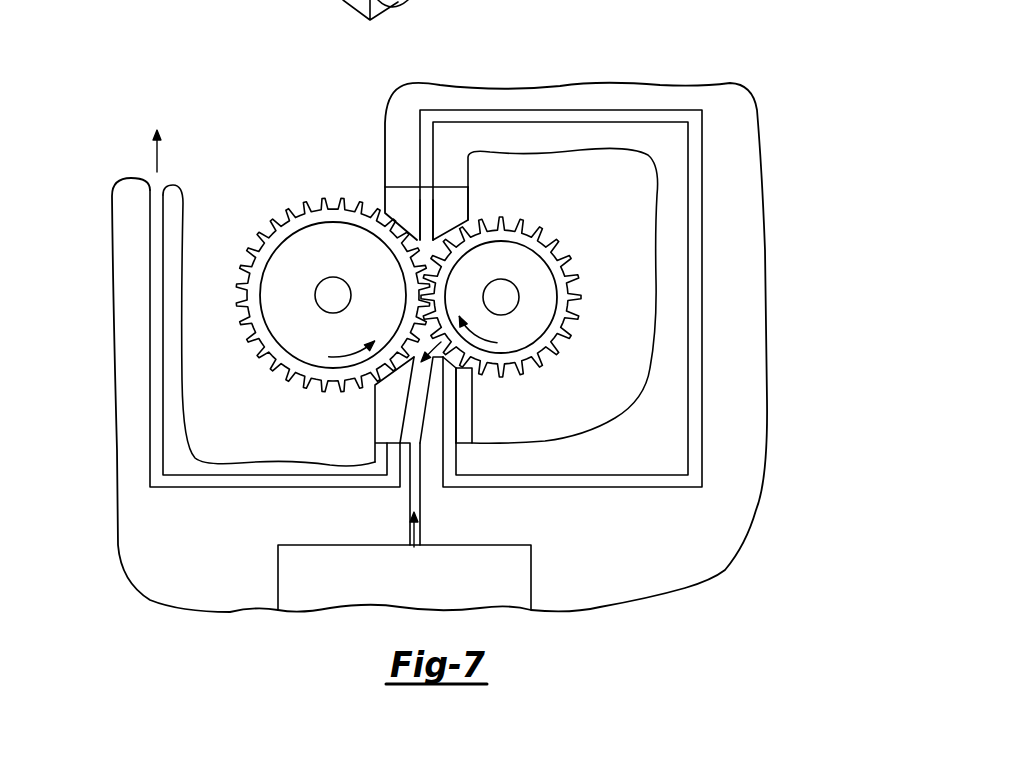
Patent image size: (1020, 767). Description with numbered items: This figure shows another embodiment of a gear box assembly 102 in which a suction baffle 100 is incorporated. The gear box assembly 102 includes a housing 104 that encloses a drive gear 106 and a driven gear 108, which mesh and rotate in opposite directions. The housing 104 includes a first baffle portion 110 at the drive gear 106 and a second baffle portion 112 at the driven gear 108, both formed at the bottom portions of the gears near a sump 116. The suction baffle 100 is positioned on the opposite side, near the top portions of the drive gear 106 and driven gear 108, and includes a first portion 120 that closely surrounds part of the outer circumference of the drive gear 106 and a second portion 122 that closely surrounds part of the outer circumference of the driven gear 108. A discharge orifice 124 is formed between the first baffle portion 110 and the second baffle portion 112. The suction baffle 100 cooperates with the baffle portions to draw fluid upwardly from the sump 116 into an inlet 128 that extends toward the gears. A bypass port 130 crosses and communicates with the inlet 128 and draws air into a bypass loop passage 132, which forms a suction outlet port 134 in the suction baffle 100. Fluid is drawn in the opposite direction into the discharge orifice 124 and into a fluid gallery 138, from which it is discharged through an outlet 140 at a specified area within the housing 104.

The suction baffle 100 is at (350, 157).
The gear box assembly 102 is at (796, 90).
The housing 104 is at (742, 292).
The drive gear 106 is at (562, 272).
The driven gear 108 is at (262, 278).
The first baffle portion 110 is at (472, 415).
The second baffle portion 112 is at (375, 428).
The sump 116 is at (490, 595).
The first portion 120 is at (462, 193).
The second portion 122 is at (396, 198).
The discharge orifice 124 is at (408, 398).
The inlet 128 is at (420, 432).
The bypass port 130 is at (452, 400).
The bypass loop passage 132 is at (693, 207).
The suction outlet port 134 is at (428, 213).
The fluid gallery 138 is at (155, 378).
The outlet 140 is at (158, 198).